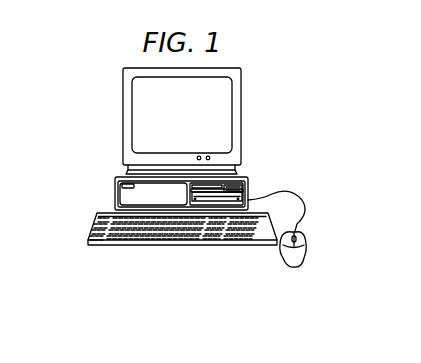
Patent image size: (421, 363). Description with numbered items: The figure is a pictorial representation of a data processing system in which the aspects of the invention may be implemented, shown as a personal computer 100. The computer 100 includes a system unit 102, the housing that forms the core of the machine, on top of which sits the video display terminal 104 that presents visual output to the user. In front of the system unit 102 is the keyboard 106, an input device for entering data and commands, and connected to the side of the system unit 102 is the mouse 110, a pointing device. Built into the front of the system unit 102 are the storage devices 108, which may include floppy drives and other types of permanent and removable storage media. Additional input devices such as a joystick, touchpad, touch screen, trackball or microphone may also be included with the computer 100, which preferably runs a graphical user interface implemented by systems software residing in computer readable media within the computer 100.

The computer 100 is at (70, 108).
The system unit 102 is at (115, 193).
The video display terminal 104 is at (242, 118).
The keyboard 106 is at (110, 245).
The storage devices 108 is at (250, 202).
The mouse 110 is at (295, 268).